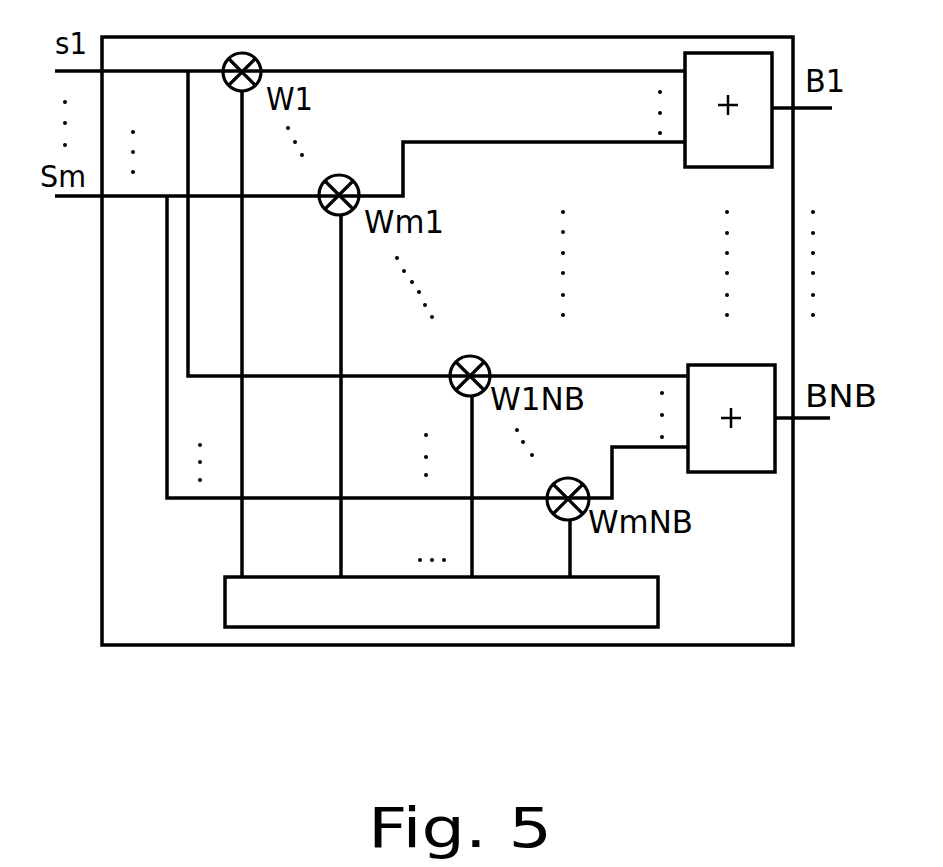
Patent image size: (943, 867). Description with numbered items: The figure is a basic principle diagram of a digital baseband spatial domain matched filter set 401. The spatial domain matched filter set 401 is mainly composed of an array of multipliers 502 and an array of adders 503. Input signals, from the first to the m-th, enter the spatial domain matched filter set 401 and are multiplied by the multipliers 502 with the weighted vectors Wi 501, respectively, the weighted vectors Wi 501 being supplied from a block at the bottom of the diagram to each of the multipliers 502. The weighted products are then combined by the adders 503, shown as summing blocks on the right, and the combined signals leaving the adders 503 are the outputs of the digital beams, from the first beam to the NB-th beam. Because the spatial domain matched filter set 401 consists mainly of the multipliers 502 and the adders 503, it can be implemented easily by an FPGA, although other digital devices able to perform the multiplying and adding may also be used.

The spatial domain matched filter set 401 is at (122, 302).
The weighted vectors Wi 501 is at (647, 590).
The multipliers 502 is at (259, 58).
The adders 503 is at (703, 155).